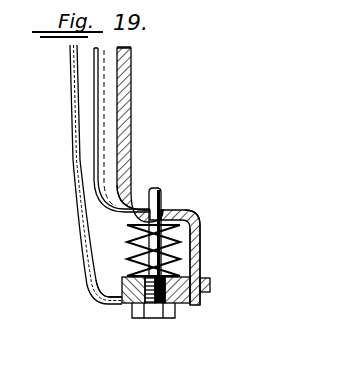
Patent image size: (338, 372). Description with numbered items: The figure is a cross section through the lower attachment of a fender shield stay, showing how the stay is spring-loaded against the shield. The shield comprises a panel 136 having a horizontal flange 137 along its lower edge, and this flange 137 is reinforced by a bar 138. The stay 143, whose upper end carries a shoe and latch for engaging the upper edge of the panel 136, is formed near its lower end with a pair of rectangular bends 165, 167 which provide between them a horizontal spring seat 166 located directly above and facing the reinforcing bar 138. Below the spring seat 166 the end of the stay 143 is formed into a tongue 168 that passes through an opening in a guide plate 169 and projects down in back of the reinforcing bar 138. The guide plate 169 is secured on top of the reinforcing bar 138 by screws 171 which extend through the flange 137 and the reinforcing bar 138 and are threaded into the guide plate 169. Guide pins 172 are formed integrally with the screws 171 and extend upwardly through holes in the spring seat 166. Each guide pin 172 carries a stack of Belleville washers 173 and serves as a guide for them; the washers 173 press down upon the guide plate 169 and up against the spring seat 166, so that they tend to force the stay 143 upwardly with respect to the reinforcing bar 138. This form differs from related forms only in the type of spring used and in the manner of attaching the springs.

The panel 136 is at (72, 136).
The horizontal flange 137 is at (121, 303).
The reinforcing bar 138 is at (121, 293).
The stay 143 is at (116, 81).
The rectangular bend 165 is at (123, 200).
The horizontal spring seat 166 is at (174, 218).
The rectangular bend 167 is at (196, 217).
The tongue 168 is at (200, 257).
The guide plate 169 is at (211, 287).
The screw 171 is at (150, 316).
The guide pin 172 is at (160, 192).
The Belleville washers 173 is at (127, 233).